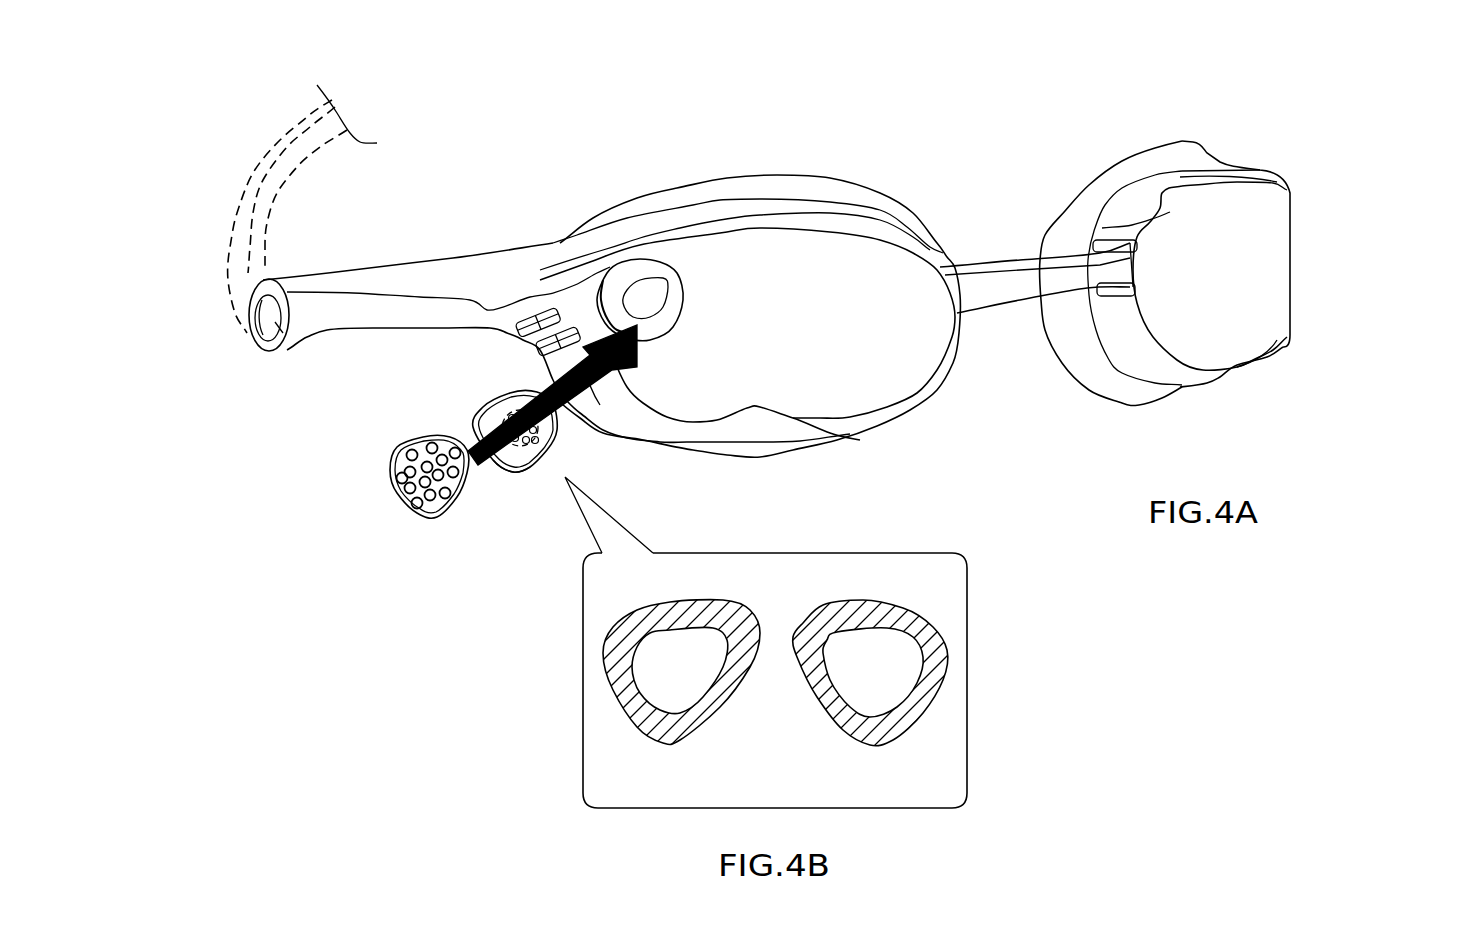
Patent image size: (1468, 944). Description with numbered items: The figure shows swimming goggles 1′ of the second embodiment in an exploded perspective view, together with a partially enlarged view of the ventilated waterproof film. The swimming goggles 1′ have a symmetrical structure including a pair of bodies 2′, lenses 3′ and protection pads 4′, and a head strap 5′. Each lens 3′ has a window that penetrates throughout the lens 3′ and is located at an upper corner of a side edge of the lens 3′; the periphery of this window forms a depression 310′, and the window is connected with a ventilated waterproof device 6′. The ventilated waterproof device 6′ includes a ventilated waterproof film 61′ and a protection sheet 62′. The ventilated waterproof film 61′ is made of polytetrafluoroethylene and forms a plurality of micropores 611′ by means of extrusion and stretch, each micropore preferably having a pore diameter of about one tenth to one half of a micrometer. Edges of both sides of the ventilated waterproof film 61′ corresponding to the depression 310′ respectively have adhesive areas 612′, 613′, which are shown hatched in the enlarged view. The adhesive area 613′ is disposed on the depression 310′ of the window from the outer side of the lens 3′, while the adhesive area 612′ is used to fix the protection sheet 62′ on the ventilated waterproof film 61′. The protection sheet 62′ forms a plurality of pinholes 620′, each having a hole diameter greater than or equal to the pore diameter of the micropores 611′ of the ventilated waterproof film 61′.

In FIG. 4A, the swimming goggles 1′ is at (1330, 158).
In FIG. 4A, the body 2′ is at (790, 212).
In FIG. 4A, the lens 3′ is at (885, 295).
In FIG. 4A, the protection pad 4′ is at (687, 207).
In FIG. 4A, the head strap 5′ is at (313, 143).
In FIG. 4A, the depression 310′ is at (635, 277).
In FIG. 4A, the ventilated waterproof device 6′ is at (157, 372).
In FIG. 4A, the ventilated waterproof film 61′ is at (477, 413).
In FIG. 4A, the micropores 611′ is at (515, 415).
In FIG. 4A, the adhesive area 612′ is at (510, 467).
In FIG. 4B, the adhesive area 612′ is at (613, 677).
In FIG. 4B, the adhesive area 613′ is at (942, 665).
In FIG. 4A, the protection sheet 62′ is at (392, 467).
In FIG. 4A, the pinholes 620′ is at (405, 503).